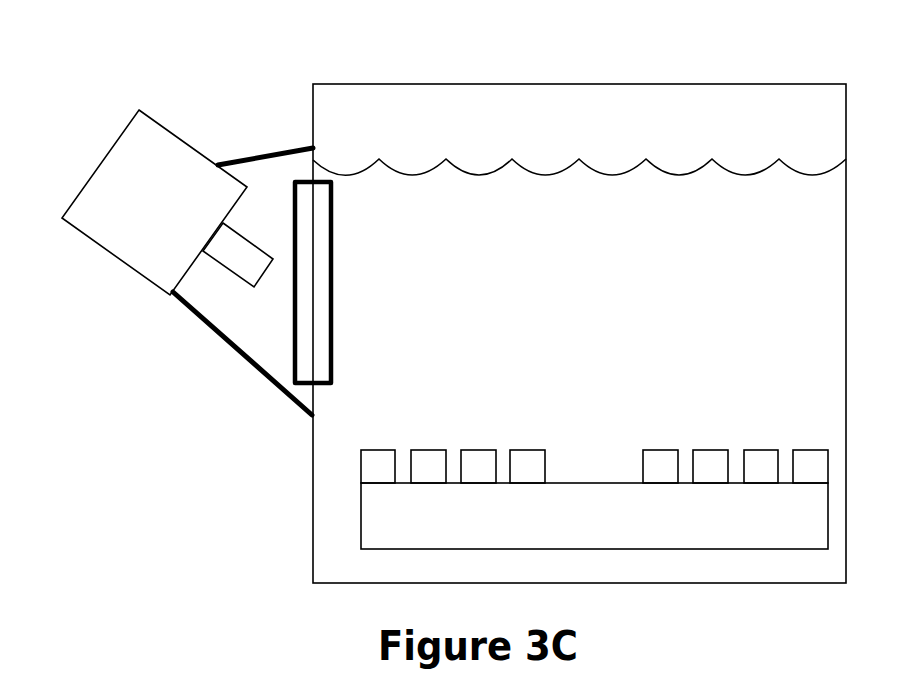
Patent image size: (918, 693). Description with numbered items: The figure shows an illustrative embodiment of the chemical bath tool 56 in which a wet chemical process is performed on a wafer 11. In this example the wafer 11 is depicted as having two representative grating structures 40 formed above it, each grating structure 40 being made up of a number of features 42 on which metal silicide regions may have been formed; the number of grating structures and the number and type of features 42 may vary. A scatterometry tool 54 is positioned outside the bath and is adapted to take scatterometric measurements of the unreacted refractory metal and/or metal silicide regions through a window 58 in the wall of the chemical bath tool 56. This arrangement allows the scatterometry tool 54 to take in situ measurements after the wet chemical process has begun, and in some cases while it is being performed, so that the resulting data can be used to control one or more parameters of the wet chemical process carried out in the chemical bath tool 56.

The wafer 11 is at (745, 517).
The grating structure 40 is at (445, 408).
The features 42 is at (477, 474).
The scatterometry tool 54 is at (172, 155).
The chemical bath tool 56 is at (731, 101).
The window 58 is at (312, 197).